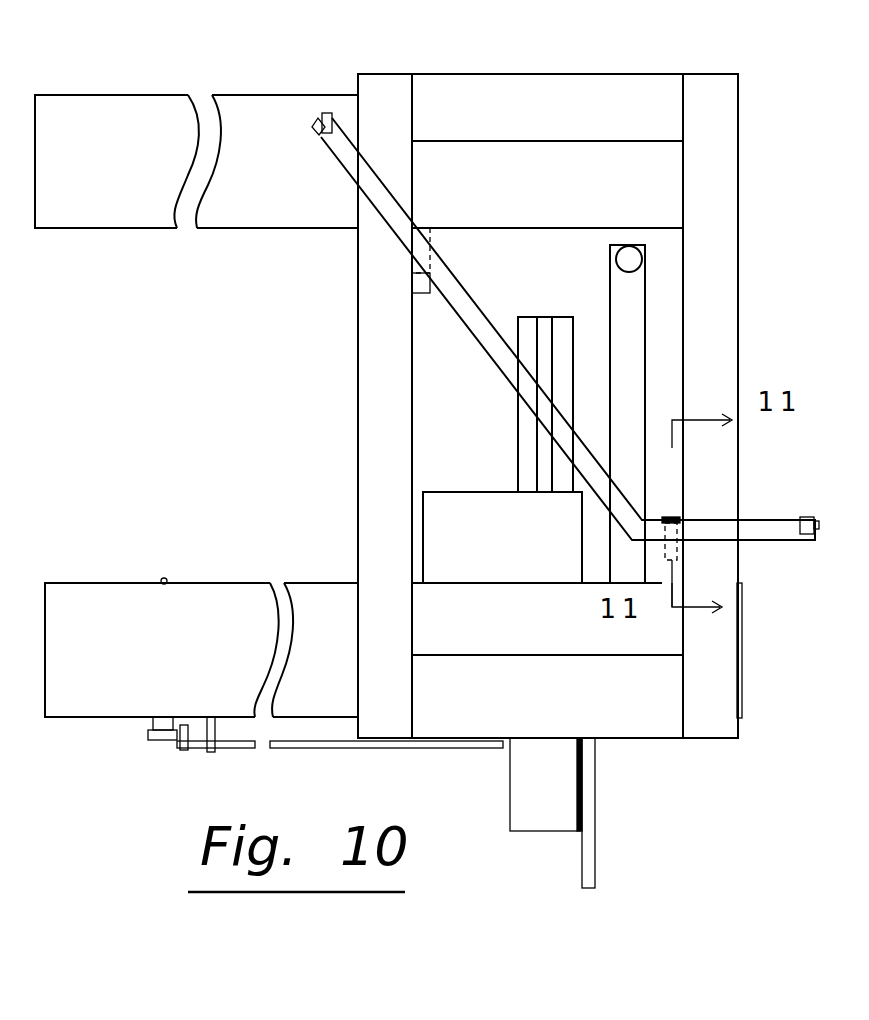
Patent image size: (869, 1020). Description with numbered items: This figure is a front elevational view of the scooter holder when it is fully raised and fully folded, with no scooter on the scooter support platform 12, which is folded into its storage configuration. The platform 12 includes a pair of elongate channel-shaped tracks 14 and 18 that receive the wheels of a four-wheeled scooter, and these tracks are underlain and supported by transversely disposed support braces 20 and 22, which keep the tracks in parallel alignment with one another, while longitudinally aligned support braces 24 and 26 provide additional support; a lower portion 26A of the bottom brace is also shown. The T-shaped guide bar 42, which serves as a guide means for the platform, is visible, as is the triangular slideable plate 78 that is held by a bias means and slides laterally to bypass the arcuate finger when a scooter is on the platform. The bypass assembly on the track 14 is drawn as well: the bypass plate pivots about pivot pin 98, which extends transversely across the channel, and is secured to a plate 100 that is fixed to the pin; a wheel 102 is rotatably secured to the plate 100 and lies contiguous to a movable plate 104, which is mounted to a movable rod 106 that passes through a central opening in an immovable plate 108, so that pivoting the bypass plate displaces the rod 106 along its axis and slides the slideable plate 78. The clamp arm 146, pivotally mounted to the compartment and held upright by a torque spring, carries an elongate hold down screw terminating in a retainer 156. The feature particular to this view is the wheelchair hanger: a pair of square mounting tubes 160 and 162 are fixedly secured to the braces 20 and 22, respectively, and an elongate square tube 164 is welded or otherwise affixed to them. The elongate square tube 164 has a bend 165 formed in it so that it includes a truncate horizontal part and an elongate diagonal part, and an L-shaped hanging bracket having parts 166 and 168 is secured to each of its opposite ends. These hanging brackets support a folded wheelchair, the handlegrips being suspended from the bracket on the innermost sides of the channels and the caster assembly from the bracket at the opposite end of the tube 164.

The scooter support platform 12 is at (624, 64).
The channel-shaped track 14 is at (112, 655).
The channel-shaped track 18 is at (135, 153).
The transverse support brace 20 is at (738, 283).
The transverse support brace 22 is at (372, 352).
The longitudinal support brace 24 is at (540, 98).
The longitudinal support brace 26 is at (618, 718).
The bottom beam extension 26A is at (543, 822).
The T-shaped guide bar 42 is at (522, 440).
The triangular slideable plate 78 is at (592, 825).
The pivot pin 98 is at (164, 578).
The plate 100 is at (168, 720).
The wheel 102 is at (158, 738).
The movable plate 104 is at (185, 750).
The movable rod 106 is at (432, 748).
The immovable plate 108 is at (217, 717).
The clamp arm 146 is at (617, 287).
The retainer 156 is at (616, 249).
The square mounting tube 160 is at (677, 568).
The square mounting tube 162 is at (417, 290).
The elongate square tube 164 is at (350, 178).
The bend 165 is at (633, 535).
The hanging bracket part 166 is at (314, 126).
The hanging bracket part 168 is at (325, 113).